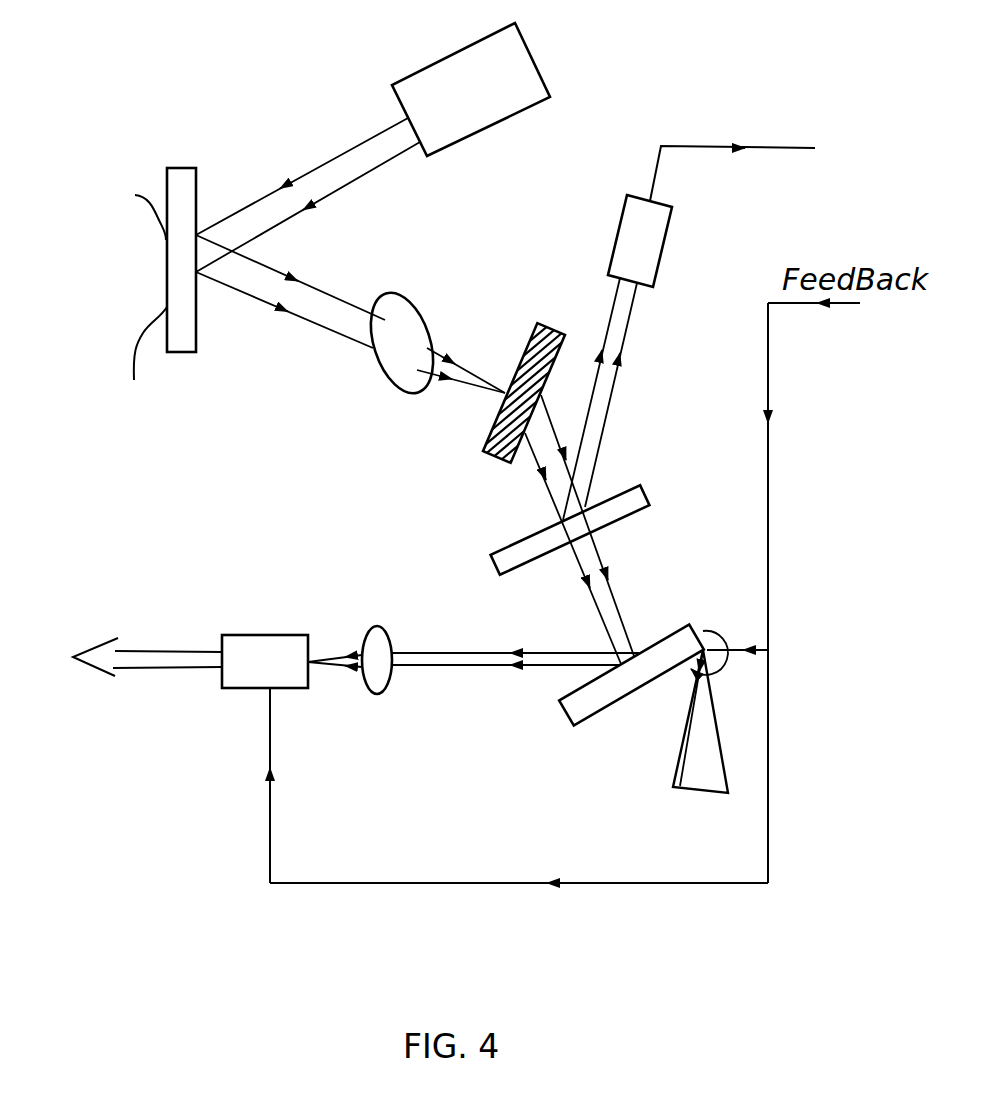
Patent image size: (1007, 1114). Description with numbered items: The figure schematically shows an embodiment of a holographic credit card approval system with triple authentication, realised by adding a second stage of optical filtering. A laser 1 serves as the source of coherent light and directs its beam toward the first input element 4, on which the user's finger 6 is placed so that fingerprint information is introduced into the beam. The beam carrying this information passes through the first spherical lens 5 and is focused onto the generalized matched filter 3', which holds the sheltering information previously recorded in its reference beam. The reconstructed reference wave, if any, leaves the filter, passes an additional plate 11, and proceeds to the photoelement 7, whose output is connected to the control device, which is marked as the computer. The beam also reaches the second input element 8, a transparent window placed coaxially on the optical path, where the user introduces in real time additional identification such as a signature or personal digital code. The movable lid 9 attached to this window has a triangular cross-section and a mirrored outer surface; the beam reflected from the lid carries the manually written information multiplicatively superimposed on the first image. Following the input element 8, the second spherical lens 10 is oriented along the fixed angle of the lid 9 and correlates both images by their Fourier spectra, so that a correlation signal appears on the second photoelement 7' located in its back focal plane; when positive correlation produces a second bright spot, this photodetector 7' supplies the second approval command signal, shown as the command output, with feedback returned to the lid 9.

The laser 1 is at (541, 50).
The input element 4 is at (184, 336).
The finger 6 is at (140, 287).
The spherical lens 5 is at (390, 379).
The generalized matched filter 3' is at (520, 401).
The beam splitter plate 11 is at (634, 504).
The photoelement 7 is at (710, 194).
The second input element 8 is at (583, 700).
The movable lid 9 is at (700, 776).
The second photoelement 7' is at (169, 638).
The second spherical lens 10 is at (373, 685).